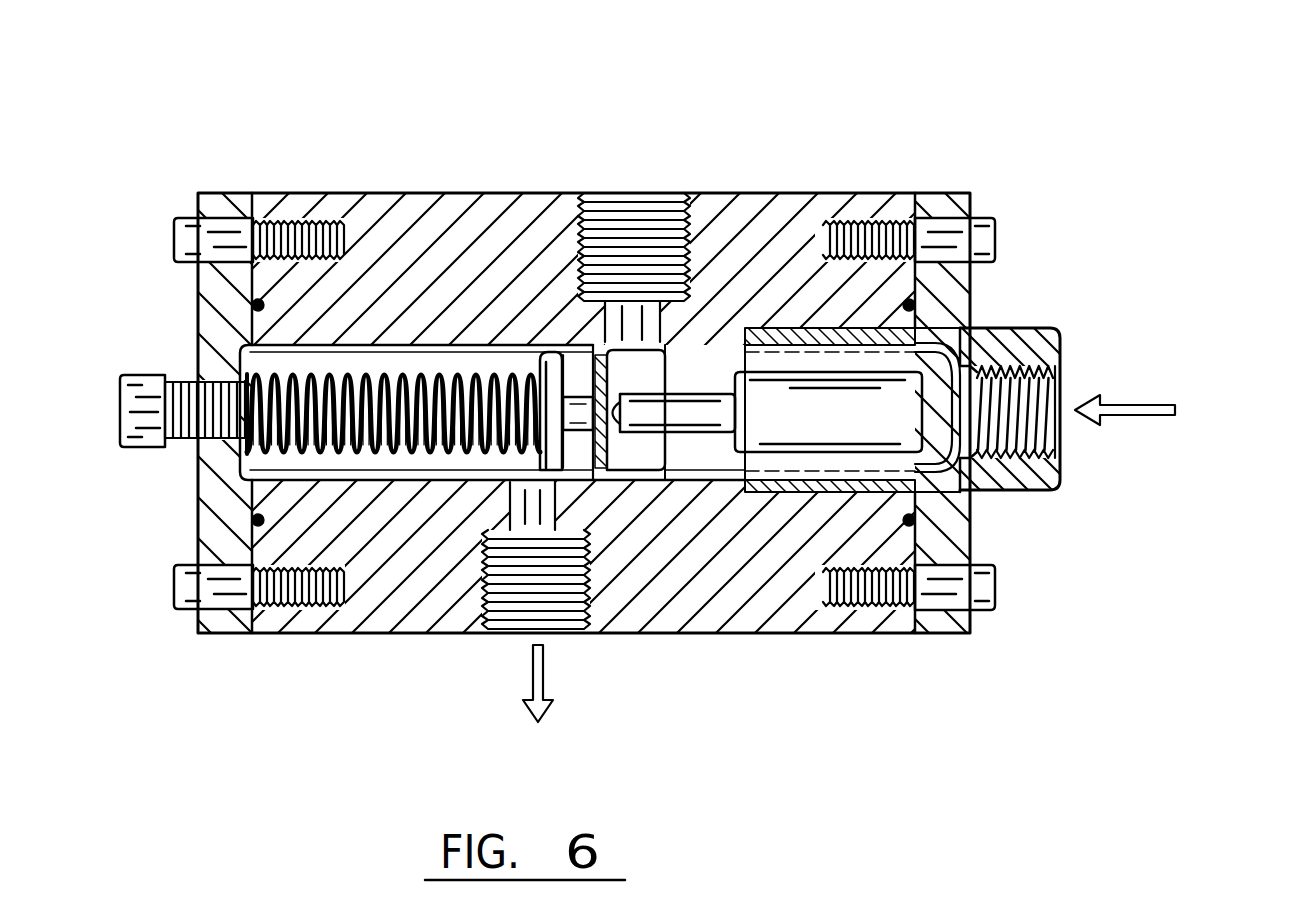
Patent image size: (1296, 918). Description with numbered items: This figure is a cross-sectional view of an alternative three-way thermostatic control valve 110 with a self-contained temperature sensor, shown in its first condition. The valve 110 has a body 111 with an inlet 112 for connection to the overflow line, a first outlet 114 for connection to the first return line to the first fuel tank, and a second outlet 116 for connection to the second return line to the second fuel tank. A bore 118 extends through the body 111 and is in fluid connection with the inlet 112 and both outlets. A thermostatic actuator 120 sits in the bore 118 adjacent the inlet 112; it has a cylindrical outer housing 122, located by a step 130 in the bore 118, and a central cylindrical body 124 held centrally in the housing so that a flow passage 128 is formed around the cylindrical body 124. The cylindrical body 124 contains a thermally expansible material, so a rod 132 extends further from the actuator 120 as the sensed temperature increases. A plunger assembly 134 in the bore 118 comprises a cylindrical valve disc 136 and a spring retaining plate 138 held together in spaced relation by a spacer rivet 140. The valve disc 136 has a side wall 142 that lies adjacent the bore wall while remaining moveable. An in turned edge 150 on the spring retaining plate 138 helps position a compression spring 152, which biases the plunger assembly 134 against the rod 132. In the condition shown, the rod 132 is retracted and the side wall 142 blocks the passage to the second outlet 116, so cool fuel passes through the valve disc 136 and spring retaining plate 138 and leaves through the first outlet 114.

The control valve 110 is at (935, 695).
The body 111 is at (265, 193).
The inlet 112 is at (1060, 385).
The first outlet 114 is at (507, 633).
The second outlet 116 is at (630, 193).
The bore 118 is at (388, 342).
The thermostatic actuator 120 is at (907, 417).
The cylindrical outer housing 122 is at (813, 330).
The central cylindrical body 124 is at (968, 497).
The flow passage 128 is at (813, 413).
The step 130 is at (742, 342).
The rod 132 is at (735, 437).
The plunger assembly 134 is at (590, 385).
The cylindrical valve disc 136 is at (642, 363).
The spring retaining plate 138 is at (530, 468).
The spacer rivet 140 is at (566, 430).
The side wall 142 is at (692, 434).
The in turned edge 150 is at (552, 460).
The compression spring 152 is at (360, 377).